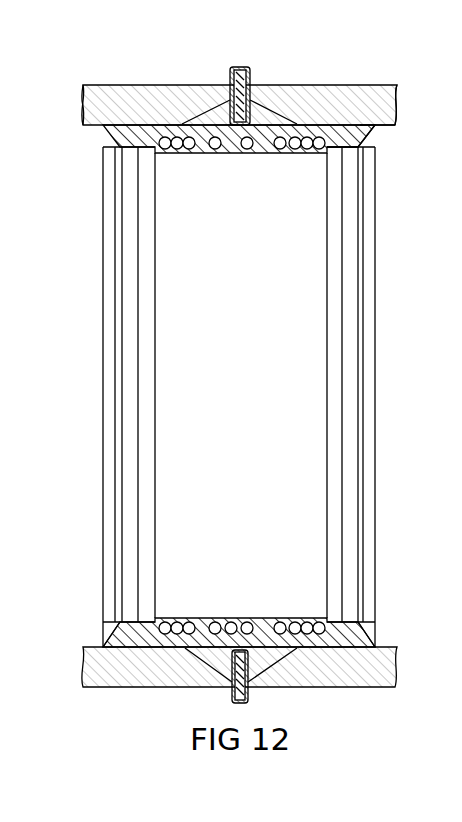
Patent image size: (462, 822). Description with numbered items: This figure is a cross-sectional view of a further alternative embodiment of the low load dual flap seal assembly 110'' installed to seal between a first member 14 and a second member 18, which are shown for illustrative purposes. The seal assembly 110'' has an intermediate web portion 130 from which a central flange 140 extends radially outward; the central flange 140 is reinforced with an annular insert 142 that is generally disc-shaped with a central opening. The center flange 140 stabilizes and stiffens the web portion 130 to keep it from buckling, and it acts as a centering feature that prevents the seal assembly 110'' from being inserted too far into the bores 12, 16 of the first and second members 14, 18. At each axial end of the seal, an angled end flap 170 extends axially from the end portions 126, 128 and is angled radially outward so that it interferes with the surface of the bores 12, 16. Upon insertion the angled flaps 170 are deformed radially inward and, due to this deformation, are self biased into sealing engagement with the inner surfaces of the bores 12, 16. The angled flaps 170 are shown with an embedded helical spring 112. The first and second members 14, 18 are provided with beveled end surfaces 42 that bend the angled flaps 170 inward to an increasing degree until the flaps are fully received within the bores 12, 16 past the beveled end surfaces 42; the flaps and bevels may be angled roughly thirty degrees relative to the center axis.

The dual flap seal assembly 110'' is at (239, 324).
The bore 12 is at (93, 124).
The first member 14 is at (137, 89).
The bore 16 is at (387, 125).
The second member 18 is at (378, 92).
The beveled end surface 42 is at (213, 110).
The embedded helical spring 112 is at (238, 618).
The end portion 126 is at (172, 160).
The end portion 128 is at (310, 160).
The intermediate web portion 130 is at (256, 617).
The central flange 140 is at (226, 696).
The annular insert 142 is at (248, 694).
The angled end flap 170 is at (104, 645).